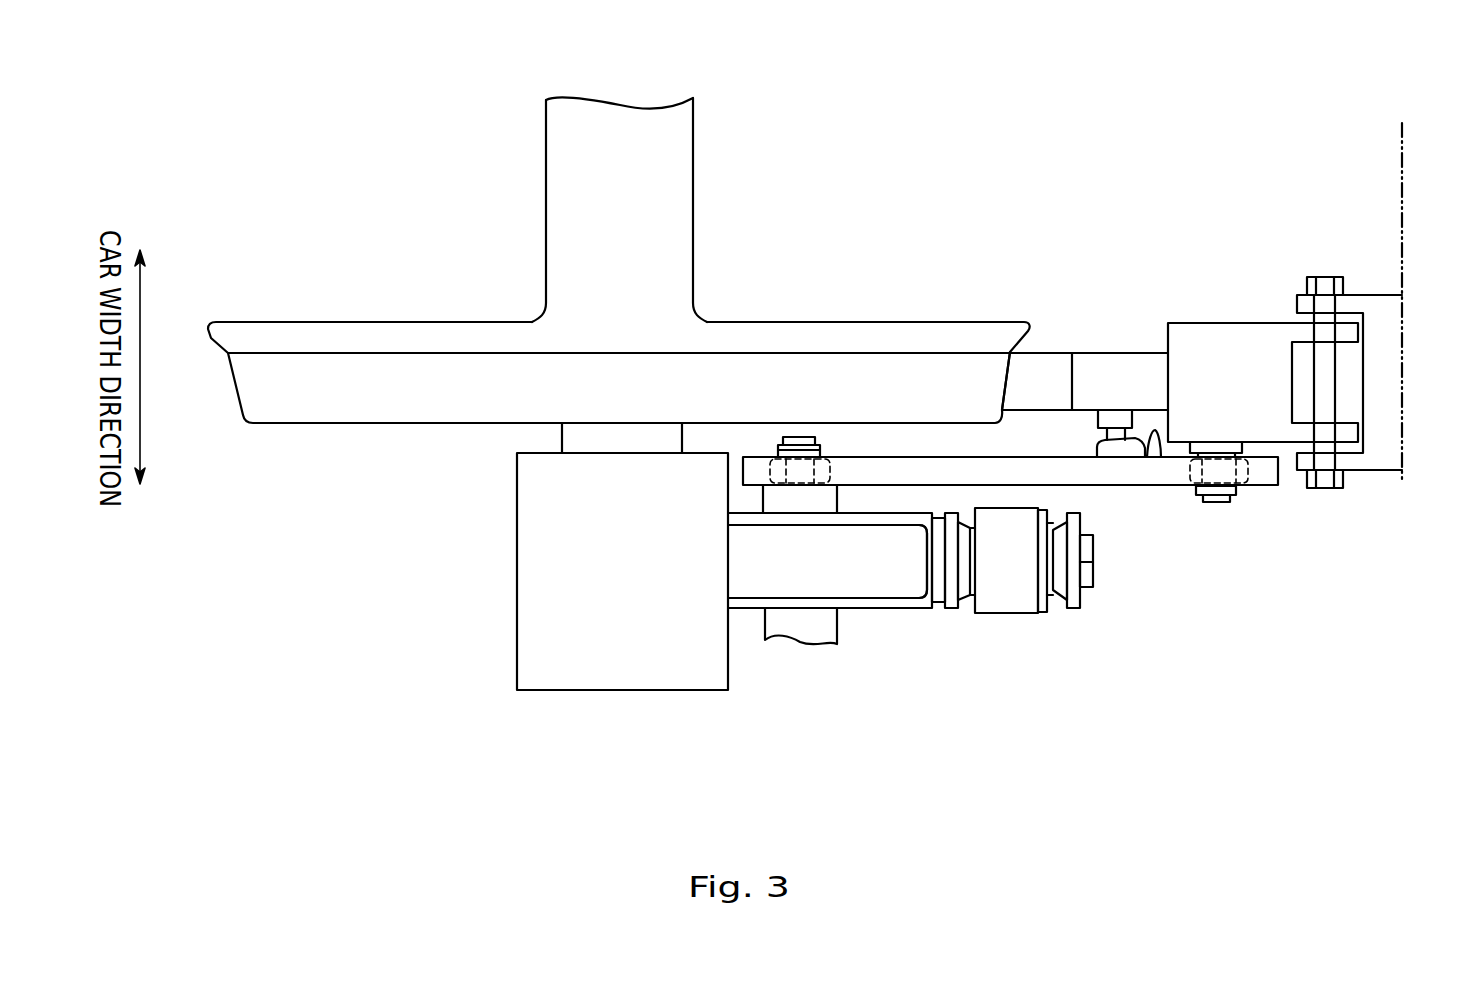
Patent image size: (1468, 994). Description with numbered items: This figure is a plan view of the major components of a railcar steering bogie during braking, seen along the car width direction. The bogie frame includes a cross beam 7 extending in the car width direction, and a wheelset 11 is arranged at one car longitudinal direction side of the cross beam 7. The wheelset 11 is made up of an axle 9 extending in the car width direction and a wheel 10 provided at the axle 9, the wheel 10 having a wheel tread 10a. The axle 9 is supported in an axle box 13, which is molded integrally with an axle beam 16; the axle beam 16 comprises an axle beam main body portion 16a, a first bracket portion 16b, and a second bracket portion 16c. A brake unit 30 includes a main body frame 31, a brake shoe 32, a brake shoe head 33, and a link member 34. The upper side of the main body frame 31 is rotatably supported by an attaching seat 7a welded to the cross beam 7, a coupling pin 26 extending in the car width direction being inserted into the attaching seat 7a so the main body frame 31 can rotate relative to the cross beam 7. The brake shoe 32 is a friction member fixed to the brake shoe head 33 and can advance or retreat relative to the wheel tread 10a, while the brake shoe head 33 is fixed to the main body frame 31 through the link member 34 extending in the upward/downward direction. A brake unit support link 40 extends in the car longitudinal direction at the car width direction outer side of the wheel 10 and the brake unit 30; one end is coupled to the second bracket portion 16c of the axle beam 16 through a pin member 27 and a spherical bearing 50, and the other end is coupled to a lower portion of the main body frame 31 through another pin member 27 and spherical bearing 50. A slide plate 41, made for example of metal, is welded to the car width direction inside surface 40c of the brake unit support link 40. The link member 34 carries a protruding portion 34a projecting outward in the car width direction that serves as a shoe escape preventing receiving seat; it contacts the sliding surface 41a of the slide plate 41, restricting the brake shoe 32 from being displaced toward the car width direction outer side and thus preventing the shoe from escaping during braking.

The cross beam 7 is at (1402, 148).
The attaching seat 7a is at (1377, 307).
The axle 9 is at (548, 131).
The wheel 10 is at (500, 332).
The wheel tread 10a is at (1003, 424).
The wheelset 11 is at (452, 117).
The axle box 13 is at (556, 676).
The axle beam 16 is at (747, 609).
The axle beam main body portion 16a is at (927, 609).
The first bracket portion 16b is at (795, 632).
The second bracket portion 16c is at (838, 498).
The coupling pin 26 is at (1330, 397).
The pin member 27 is at (802, 437).
The brake unit 30 is at (1257, 293).
The main body frame 31 is at (1218, 337).
The brake shoe 32 is at (1042, 365).
The brake shoe head 33 is at (1113, 365).
The link member 34 is at (1133, 440).
The protruding portion 34a is at (1100, 436).
The brake unit support link 40 is at (849, 456).
The car width direction inside surface 40c is at (895, 457).
The slide plate 41 is at (1133, 449).
The sliding surface 41a is at (1158, 434).
The spherical bearing 50 is at (770, 463).